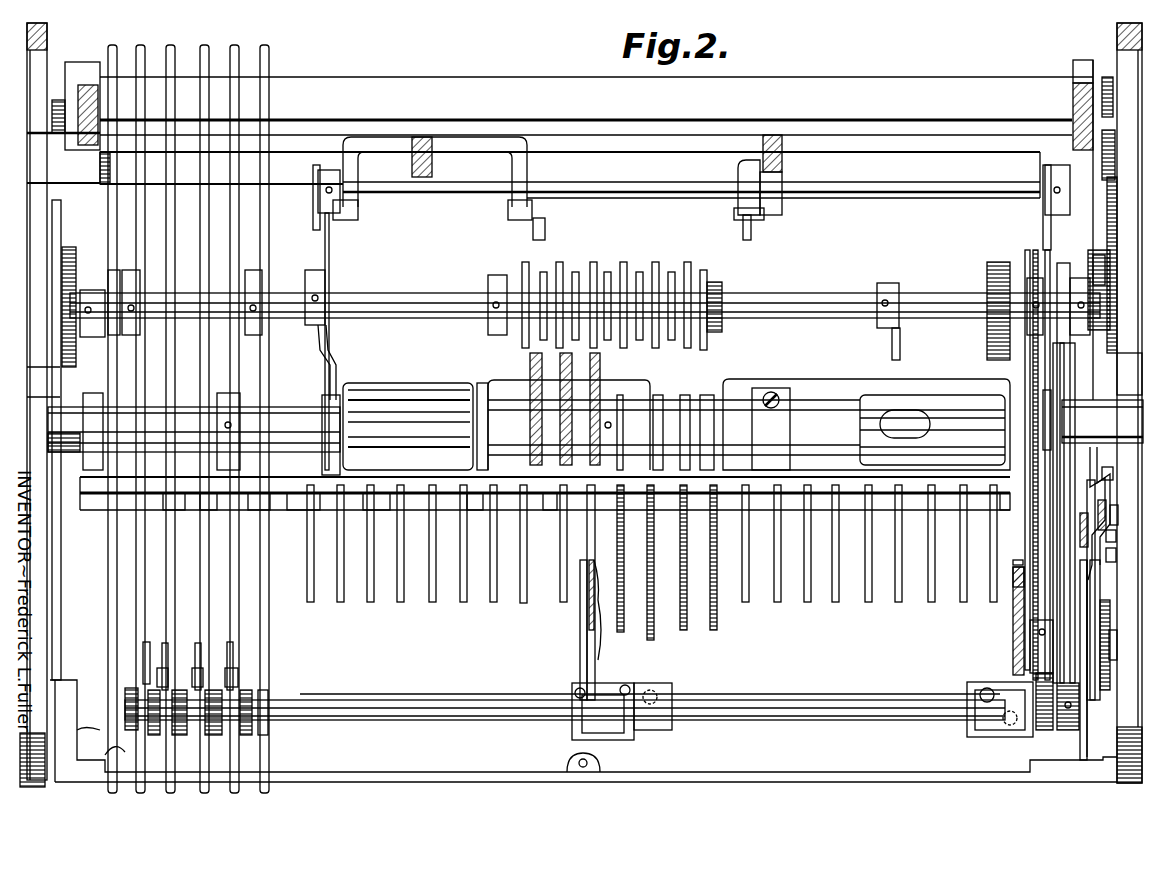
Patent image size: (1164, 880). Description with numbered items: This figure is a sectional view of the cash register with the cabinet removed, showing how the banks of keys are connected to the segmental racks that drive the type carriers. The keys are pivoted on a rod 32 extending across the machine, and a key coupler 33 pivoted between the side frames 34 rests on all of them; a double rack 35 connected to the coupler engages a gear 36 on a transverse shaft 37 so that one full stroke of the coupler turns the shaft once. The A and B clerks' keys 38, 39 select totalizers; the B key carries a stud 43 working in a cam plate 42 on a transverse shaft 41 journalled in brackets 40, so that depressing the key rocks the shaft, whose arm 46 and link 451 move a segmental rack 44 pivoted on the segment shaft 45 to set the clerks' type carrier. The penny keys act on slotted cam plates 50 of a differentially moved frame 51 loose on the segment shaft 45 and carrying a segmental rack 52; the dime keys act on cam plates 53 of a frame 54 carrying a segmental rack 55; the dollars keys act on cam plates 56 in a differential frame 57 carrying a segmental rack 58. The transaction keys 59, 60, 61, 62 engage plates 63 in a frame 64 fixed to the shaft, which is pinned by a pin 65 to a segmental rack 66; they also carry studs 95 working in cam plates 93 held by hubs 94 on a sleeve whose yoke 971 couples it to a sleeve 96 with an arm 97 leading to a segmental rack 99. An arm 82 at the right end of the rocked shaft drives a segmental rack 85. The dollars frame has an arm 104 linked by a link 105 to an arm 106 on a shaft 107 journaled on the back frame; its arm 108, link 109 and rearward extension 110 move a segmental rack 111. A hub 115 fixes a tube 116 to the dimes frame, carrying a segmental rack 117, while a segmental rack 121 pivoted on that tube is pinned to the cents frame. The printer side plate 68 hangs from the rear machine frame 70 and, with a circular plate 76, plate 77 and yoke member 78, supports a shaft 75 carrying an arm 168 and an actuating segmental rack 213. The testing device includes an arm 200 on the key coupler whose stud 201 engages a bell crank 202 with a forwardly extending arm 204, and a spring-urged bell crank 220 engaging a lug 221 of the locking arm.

The rod 32 is at (382, 700).
The key coupler 33 is at (1066, 314).
The side frames 34 is at (1129, 374).
The double rack 35 is at (1098, 252).
The gear 36 is at (1112, 288).
The transverse shaft 37 is at (821, 302).
The A clerk's key 38 is at (90, 735).
The B clerk's key 39 is at (119, 748).
The brackets 40 is at (160, 733).
The transverse shaft 41 is at (125, 710).
The cam plate 42 is at (148, 690).
The stud 43 is at (143, 665).
The segmental rack 44 is at (586, 622).
The segment shaft 45 is at (489, 431).
The arm 46 is at (590, 668).
The cam plates 50 is at (869, 605).
The differentially moved frame 51 is at (826, 379).
The segmental rack 52 is at (715, 632).
The cam plate 53 is at (175, 597).
The differentially movable frame 54 is at (662, 410).
The segmental rack 55 is at (683, 632).
The cam plates 56 is at (305, 605).
The differential frame 57 is at (408, 383).
The segmental rack 58 is at (650, 642).
The paid out key 59 is at (178, 740).
The charge key 60 is at (212, 740).
The received on account key 61 is at (245, 740).
The no sale key 62 is at (278, 740).
The plates 63 is at (240, 578).
The frame 64 is at (108, 498).
The pin 65 is at (612, 424).
The segmental rack 66 is at (620, 634).
The vertical side plate 68 is at (1013, 652).
The machine frame 70 is at (570, 175).
The shaft 75 is at (1110, 612).
The circular plate 76 is at (1105, 590).
The plate 77 is at (1010, 636).
The yoke member 78 is at (1096, 590).
The arm 82 is at (1030, 675).
The segmental rack 85 is at (1090, 485).
The cam plates 93 is at (168, 650).
The hubs 94 is at (203, 678).
The studs 95 is at (233, 650).
The sleeve 96 is at (858, 700).
The arm 97 is at (1036, 660).
The segmental rack 99 is at (1097, 510).
The upwardly extending arm 104 is at (322, 440).
The link 105 is at (345, 330).
The arm 106 is at (318, 205).
The shaft 107 is at (445, 195).
The arm 108 is at (1043, 220).
The link 109 is at (1049, 240).
The rearward extension 110 is at (1063, 513).
The segmental rack 111 is at (1082, 528).
The hub 115 is at (771, 429).
The tube 116 is at (955, 425).
The segmental rack 117 is at (1035, 530).
The segmental rack 121 is at (1027, 548).
The arm 168 is at (1140, 676).
The upwardly extending arm 200 is at (1093, 420).
The stud 201 is at (1113, 480).
The bell crank 202 is at (1112, 518).
The forwardly extending arm 204 is at (1126, 647).
The segmental rack 213 is at (1010, 625).
The bell crank 220 is at (1108, 540).
The lug 221 is at (1108, 558).
The link 451 is at (585, 637).
The yoke 971 is at (618, 740).